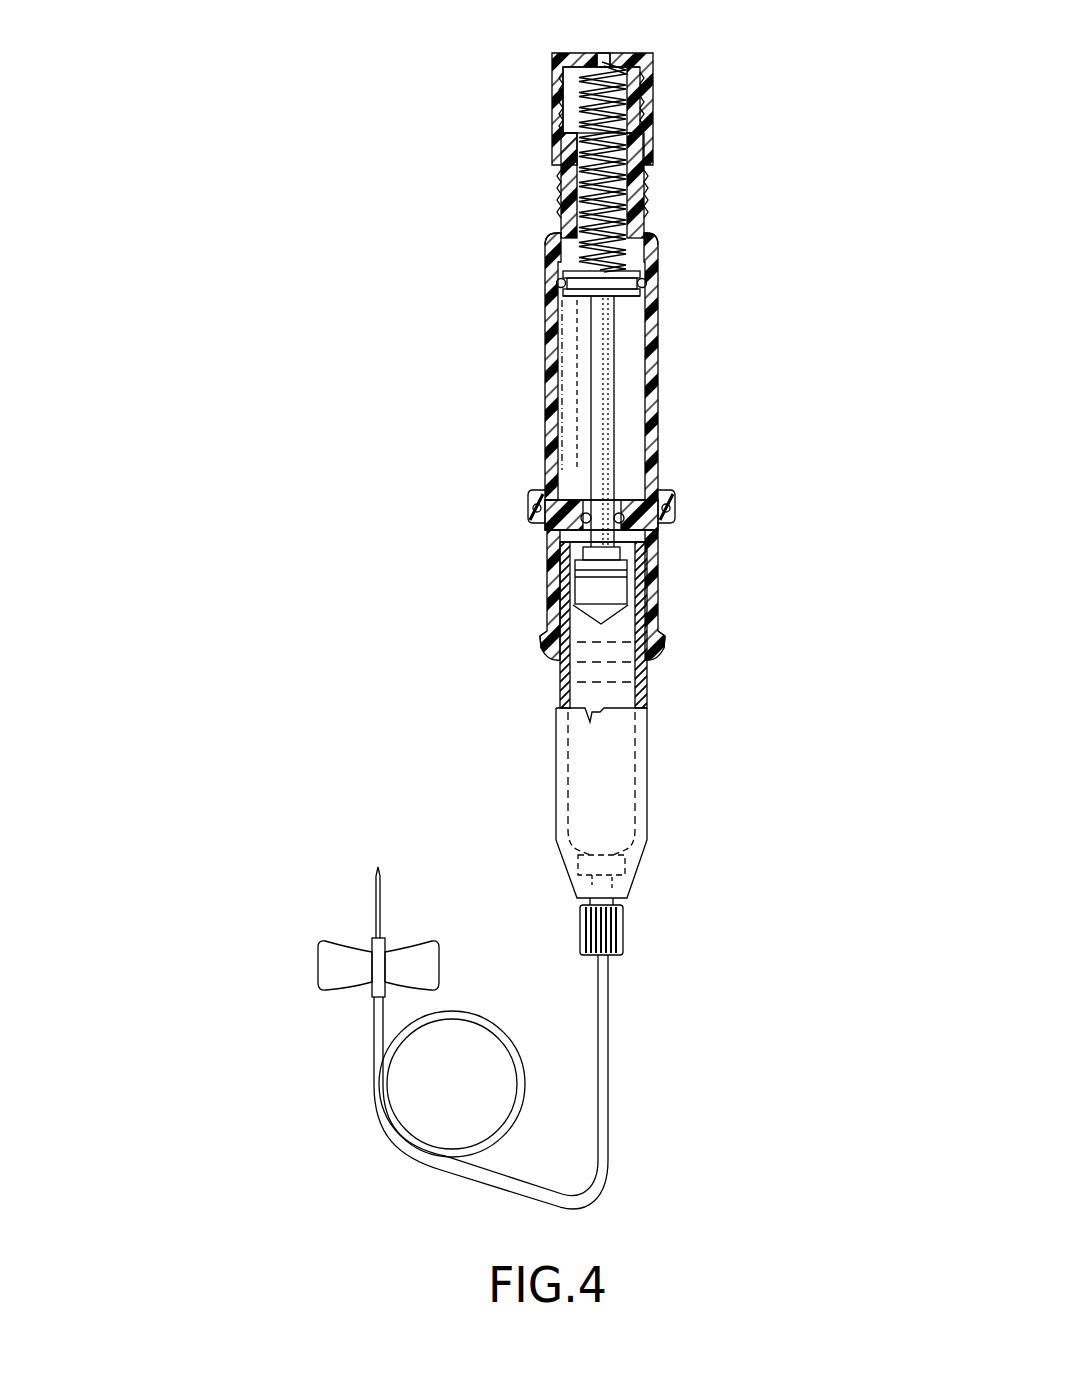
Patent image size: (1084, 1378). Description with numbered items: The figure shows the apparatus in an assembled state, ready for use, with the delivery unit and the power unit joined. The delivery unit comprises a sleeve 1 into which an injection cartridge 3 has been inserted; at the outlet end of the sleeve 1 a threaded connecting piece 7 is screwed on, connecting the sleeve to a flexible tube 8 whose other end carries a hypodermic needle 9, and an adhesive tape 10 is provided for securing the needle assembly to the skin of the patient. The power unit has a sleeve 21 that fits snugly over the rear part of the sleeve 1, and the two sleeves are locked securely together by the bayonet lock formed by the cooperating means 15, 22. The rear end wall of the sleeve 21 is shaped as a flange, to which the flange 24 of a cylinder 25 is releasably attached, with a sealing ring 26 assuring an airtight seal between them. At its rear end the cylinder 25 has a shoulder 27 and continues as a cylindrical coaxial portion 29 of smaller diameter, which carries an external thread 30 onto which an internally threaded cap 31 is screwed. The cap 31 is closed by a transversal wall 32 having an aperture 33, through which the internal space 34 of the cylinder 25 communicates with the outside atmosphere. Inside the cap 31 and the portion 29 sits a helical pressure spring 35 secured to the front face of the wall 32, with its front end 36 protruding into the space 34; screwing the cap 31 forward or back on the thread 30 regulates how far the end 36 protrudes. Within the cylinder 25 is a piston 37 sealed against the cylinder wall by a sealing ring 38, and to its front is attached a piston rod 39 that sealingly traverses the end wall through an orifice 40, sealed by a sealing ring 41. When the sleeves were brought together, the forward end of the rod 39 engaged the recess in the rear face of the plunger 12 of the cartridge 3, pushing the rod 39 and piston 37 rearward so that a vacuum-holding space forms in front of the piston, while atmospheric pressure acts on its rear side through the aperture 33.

The sleeve 1 is at (542, 783).
The injection cartridge 3 is at (645, 688).
The threaded connecting piece 7 is at (624, 924).
The flexible tube 8 is at (609, 1087).
The hypodermic needle 9 is at (381, 915).
The adhesive tape 10 is at (437, 984).
The plunger 12 is at (580, 588).
The locking means 15 is at (547, 632).
The sleeve 21 is at (657, 577).
The locking means 22 is at (660, 628).
The flange 24 is at (672, 492).
The cylinder 25 is at (546, 357).
The sealing ring 26 is at (531, 517).
The shoulder 27 is at (647, 228).
The cylindrical coaxial portion 29 is at (563, 217).
The external thread 30 is at (562, 178).
The threaded cap 31 is at (652, 119).
The transversal wall 32 is at (632, 60).
The aperture 33 is at (603, 62).
The internal space 34 is at (623, 368).
The helical pressure spring 35 is at (565, 120).
The front end of spring 36 is at (647, 277).
The piston 37 is at (620, 297).
The sealing ring 38 is at (548, 276).
The piston rod 39 is at (613, 416).
The orifice 40 is at (590, 512).
The sealing ring 41 is at (620, 532).